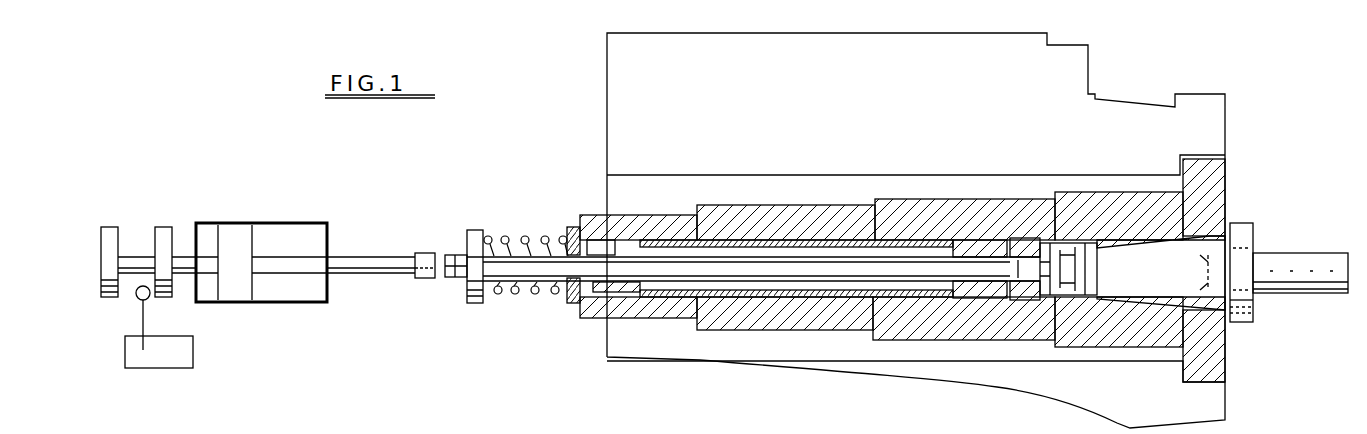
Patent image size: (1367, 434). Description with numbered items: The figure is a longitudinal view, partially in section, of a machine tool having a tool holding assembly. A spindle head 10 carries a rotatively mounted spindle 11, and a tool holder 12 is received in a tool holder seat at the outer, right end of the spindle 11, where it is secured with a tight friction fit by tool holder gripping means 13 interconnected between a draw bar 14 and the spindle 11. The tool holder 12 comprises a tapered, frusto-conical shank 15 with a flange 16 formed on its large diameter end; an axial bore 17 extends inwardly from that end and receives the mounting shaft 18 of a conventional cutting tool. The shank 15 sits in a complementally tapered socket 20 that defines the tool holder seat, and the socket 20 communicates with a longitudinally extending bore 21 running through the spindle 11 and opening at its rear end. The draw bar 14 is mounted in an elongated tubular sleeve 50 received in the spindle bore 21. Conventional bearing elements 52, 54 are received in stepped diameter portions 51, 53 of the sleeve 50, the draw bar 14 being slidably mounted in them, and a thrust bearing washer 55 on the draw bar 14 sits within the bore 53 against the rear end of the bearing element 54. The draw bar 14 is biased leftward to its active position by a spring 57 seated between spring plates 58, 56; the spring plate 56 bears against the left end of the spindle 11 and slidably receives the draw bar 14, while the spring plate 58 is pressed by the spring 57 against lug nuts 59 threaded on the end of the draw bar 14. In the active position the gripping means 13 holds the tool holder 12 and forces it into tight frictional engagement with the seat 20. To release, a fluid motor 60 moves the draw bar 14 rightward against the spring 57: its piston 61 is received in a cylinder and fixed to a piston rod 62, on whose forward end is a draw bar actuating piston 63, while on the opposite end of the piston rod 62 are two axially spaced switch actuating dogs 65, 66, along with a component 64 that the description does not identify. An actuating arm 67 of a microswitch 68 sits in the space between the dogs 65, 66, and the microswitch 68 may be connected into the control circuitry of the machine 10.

The spindle head 10 is at (963, 34).
The spindle 11 is at (1227, 193).
The tool holder 12 is at (1262, 229).
The tool holder gripping means 13 is at (1023, 292).
The draw bar 14 is at (695, 270).
The shank 15 is at (1176, 268).
The flange 16 is at (1238, 318).
The axial bore 17 is at (1295, 256).
The mounting shaft 18 is at (1302, 285).
The socket 20 is at (1232, 228).
The spindle bore 21 is at (1042, 230).
The tubular sleeve 50 is at (847, 217).
The stepped diameter portion 51 is at (1005, 230).
The bearing element 52 is at (978, 230).
The stepped diameter portion 53 is at (643, 217).
The bearing element 54 is at (610, 285).
The thrust bearing washer 55 is at (592, 242).
The spring plate 56 is at (572, 304).
The spring 57 is at (517, 293).
The spring plate 58 is at (475, 305).
The lug nuts 59 is at (463, 280).
The fluid motor 60 is at (280, 222).
The piston 61 is at (233, 292).
The piston rod 62 is at (368, 265).
The draw bar actuating piston 63 is at (427, 255).
The shaft 64 is at (130, 262).
The switch actuating dog 65 is at (162, 227).
The switch actuating dog 66 is at (112, 227).
The actuating arm 67 is at (136, 296).
The microswitch 68 is at (160, 360).